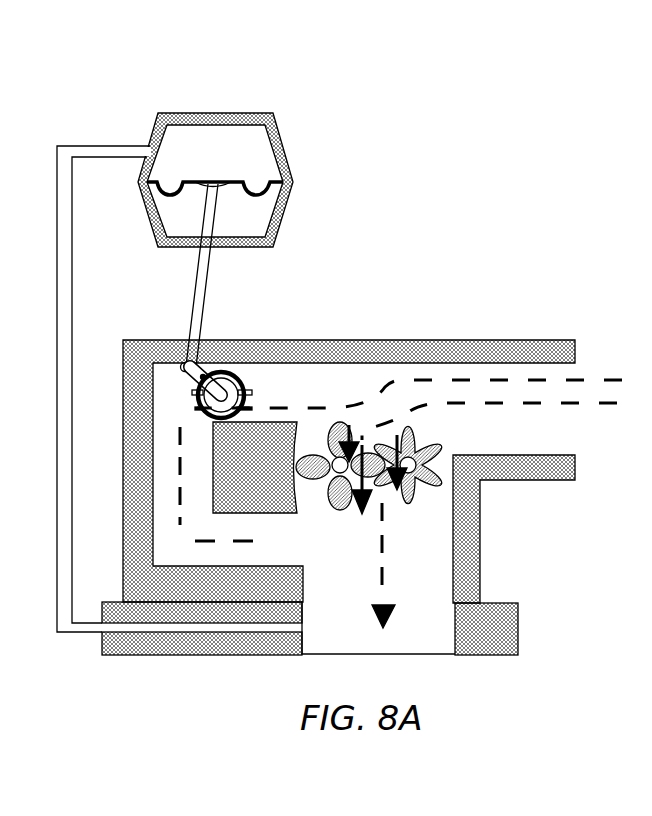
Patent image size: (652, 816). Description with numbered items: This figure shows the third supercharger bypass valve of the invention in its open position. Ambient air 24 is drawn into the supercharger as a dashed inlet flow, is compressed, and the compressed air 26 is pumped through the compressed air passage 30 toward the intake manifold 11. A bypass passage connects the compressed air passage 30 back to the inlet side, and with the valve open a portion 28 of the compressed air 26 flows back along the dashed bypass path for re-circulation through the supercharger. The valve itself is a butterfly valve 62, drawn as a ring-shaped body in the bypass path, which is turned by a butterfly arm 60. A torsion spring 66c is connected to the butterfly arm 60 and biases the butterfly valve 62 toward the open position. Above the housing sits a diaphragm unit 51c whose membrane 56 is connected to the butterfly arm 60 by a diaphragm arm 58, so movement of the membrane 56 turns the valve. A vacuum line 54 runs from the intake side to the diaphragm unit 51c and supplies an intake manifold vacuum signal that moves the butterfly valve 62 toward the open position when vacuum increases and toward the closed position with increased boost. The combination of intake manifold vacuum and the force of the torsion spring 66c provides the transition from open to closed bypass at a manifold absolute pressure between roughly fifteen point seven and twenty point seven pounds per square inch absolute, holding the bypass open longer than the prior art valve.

The intake manifold 11 is at (505, 635).
The ambient air 24 is at (577, 380).
The compressed air 26 is at (383, 538).
The portion of compressed air 28 is at (180, 467).
The compressed air passage 30 is at (369, 532).
The pump reservoir 51c is at (157, 132).
The vacuum line 54 is at (88, 150).
The membrane 56 is at (255, 185).
The diaphragm arm 58 is at (207, 260).
The butterfly arm 60 is at (203, 362).
The butterfly valve 62 is at (240, 386).
The torsion spring 66c is at (252, 386).